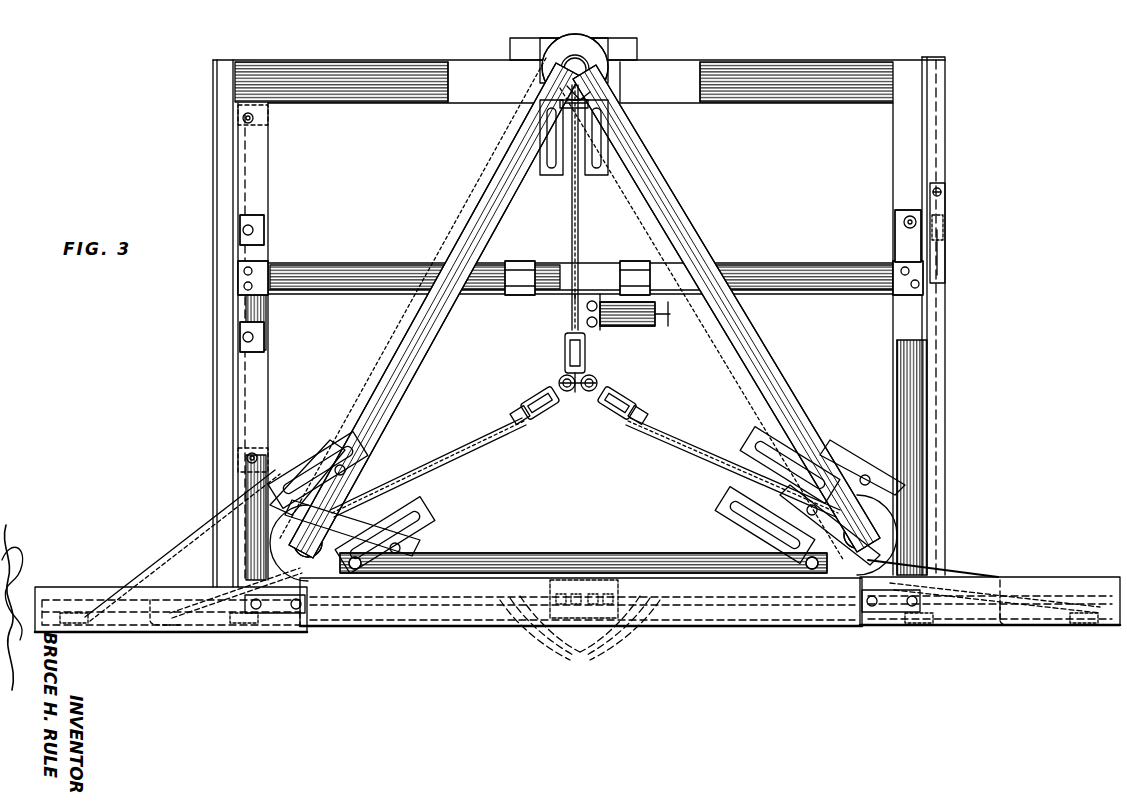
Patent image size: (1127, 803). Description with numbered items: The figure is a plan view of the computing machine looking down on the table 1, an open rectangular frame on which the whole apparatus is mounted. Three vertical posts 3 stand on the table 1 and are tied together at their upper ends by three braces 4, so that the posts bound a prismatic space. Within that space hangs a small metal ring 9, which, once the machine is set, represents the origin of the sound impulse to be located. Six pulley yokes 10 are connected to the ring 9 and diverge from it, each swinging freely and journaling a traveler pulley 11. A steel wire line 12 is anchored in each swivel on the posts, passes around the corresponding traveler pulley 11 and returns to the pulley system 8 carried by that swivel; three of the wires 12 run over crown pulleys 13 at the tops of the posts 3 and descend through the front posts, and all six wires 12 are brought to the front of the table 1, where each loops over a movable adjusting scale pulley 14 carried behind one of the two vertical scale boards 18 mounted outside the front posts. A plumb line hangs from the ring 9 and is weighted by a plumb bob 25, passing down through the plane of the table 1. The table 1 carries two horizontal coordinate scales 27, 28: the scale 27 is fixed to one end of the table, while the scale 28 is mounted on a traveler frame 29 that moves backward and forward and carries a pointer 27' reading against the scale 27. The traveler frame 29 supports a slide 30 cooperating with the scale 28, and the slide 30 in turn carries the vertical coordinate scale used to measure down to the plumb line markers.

The table 1 is at (356, 72).
The vertical posts 3 is at (570, 60).
The braces 4 is at (480, 206).
The pulley system 8 is at (546, 140).
The metal ring 9 is at (588, 381).
The pulley yokes 10 is at (568, 353).
The traveler pulley 11 is at (632, 401).
The steel wire line 12 is at (572, 196).
The crown pulleys 13 is at (557, 150).
The adjusting scale pulley 14 is at (120, 627).
The scale boards 18 is at (170, 627).
The plumb bob 25 is at (578, 407).
The horizontal coordinate scale 27 is at (947, 316).
The pointer 27' is at (964, 242).
The horizontal coordinate scale 28 is at (476, 291).
The traveler frame 29 is at (352, 291).
The slide 30 is at (549, 296).